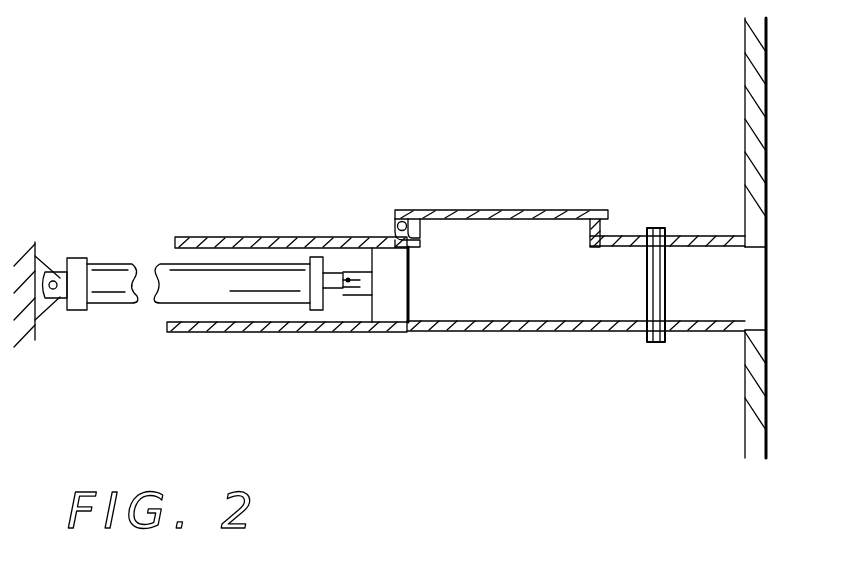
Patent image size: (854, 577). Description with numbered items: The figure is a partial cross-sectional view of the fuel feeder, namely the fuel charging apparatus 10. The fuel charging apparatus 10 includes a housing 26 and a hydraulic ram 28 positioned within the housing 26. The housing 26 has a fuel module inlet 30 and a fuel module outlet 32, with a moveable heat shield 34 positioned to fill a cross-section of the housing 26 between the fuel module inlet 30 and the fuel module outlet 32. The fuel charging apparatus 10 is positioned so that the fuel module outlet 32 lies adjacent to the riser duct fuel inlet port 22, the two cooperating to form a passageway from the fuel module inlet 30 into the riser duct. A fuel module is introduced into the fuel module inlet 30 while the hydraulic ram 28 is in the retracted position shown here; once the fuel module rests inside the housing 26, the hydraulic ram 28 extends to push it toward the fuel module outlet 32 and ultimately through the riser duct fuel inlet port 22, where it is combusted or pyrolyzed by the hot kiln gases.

The fuel charging apparatus 10 is at (292, 140).
The riser duct fuel inlet port 22 is at (769, 357).
The housing 26 is at (452, 332).
The hydraulic ram 28 is at (153, 252).
The fuel module inlet 30 is at (463, 210).
The fuel module outlet 32 is at (770, 278).
The moveable heat shield 34 is at (657, 343).